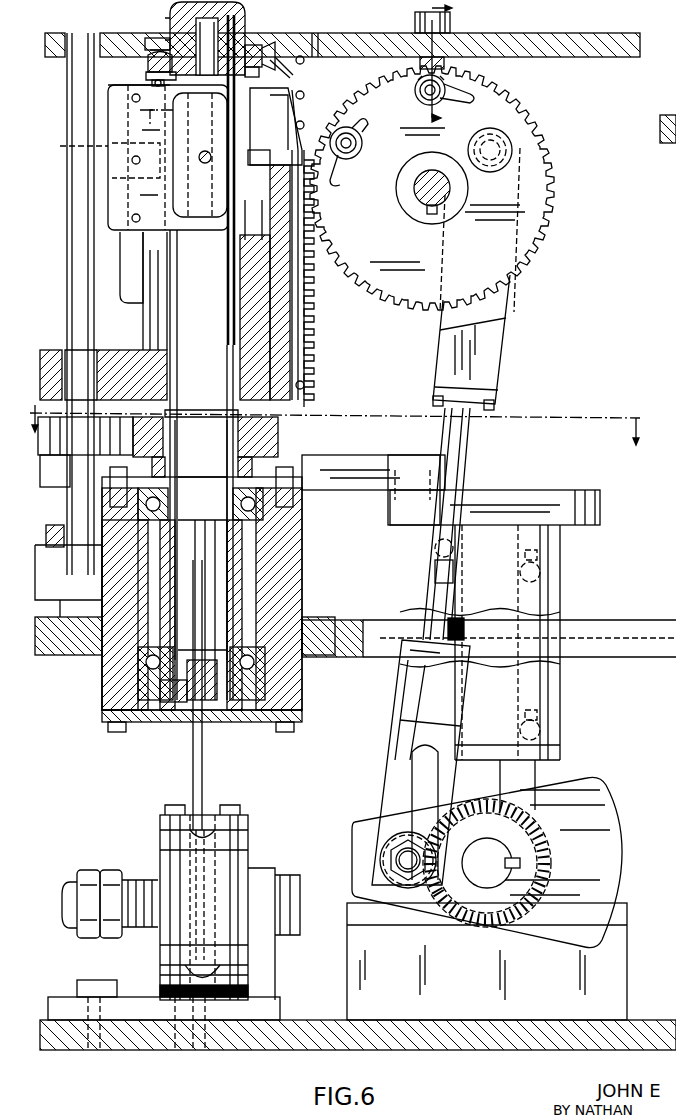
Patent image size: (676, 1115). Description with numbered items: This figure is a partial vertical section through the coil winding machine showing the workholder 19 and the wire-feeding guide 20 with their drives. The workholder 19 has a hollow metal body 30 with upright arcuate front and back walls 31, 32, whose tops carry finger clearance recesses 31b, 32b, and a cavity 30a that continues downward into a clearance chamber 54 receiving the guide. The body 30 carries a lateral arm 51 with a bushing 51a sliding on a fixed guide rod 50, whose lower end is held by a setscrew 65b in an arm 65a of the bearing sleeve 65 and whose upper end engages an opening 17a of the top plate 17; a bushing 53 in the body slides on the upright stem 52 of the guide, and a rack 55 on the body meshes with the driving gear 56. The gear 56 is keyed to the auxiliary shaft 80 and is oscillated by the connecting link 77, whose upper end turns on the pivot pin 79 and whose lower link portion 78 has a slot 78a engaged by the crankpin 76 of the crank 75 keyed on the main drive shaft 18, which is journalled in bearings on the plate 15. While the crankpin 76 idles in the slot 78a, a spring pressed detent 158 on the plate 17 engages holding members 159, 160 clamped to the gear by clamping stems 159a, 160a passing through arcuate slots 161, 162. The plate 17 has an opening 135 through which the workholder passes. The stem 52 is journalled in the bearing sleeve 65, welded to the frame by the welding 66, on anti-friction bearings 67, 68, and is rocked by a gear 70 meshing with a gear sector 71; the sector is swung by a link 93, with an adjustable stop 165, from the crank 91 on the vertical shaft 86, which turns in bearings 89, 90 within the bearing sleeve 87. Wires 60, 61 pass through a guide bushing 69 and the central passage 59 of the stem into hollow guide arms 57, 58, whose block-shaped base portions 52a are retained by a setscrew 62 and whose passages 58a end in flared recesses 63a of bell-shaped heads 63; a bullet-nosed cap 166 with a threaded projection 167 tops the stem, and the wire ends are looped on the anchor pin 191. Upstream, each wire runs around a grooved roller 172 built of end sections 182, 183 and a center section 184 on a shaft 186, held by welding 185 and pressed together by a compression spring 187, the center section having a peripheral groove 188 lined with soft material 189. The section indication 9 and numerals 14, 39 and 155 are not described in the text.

The section line 9 is at (334, 426).
The direction arrow 14 is at (454, 66).
The plate 15 is at (655, 1020).
The plate 17 is at (530, 40).
The opening 17a is at (67, 70).
The main drive shaft 18 is at (480, 875).
The workholder 19 is at (100, 186).
The wire-feeding guide 20 is at (170, 32).
The hollow metal body 30 is at (120, 270).
The cavity 30a is at (253, 226).
The front wall 31 is at (118, 130).
The recess 31b is at (71, 145).
The back wall 32 is at (290, 100).
The recess 32b is at (290, 100).
The slide block 39 is at (176, 128).
The guide rod 50 is at (88, 220).
The arm 51 is at (52, 350).
The bushing 51a is at (104, 350).
The stem 52 is at (302, 346).
The base portions 52a is at (249, 77).
The bushing 53 is at (302, 380).
The clearance chamber 54 is at (168, 262).
The rack 55 is at (314, 312).
The driving gear 56 is at (548, 160).
The guide arm 57 is at (268, 44).
The guide arm 58 is at (150, 38).
The passage 58a is at (148, 55).
The central passage 59 is at (205, 575).
The wire 60 is at (283, 72).
The wire 61 is at (158, 88).
The setscrew 62 is at (250, 45).
The bell-shaped head 63 is at (145, 40).
The recess 63a is at (146, 74).
The bearing sleeve 65 is at (302, 580).
The arm 65a is at (74, 603).
The setscrew 65b is at (68, 581).
The welding 66 is at (304, 612).
The anti-friction bearing 67 is at (262, 660).
The anti-friction bearing 68 is at (262, 508).
The guide bushing 69 is at (170, 700).
The gear 70 is at (335, 411).
The gear sector 71 is at (108, 425).
The crank 75 is at (575, 778).
The crankpin 76 is at (395, 845).
The connecting link 77 is at (470, 445).
The link portion 78 is at (388, 760).
The slot 78a is at (405, 785).
The pivot pin 79 is at (505, 140).
The auxiliary shaft 80 is at (414, 172).
The vertical shaft 86 is at (560, 662).
The bearing sleeve 87 is at (565, 590).
The antifriction bearing 89 is at (565, 722).
The antifriction bearing 90 is at (565, 565).
The crank 91 is at (538, 492).
The link 93 is at (398, 458).
The opening 135 is at (323, 36).
The stub 155 is at (665, 152).
The detent 158 is at (452, 70).
The holding member 159 is at (416, 98).
The clamping stem 159a is at (415, 90).
The holding member 160 is at (352, 160).
The clamping stem 160a is at (366, 126).
The arcuate slot 161 is at (470, 90).
The arcuate slot 162 is at (342, 184).
The adjustable stop 165 is at (52, 487).
The cap 166 is at (207, 38).
The threaded projection 167 is at (209, 48).
The grooved roller 172 is at (248, 832).
The end section 182 is at (242, 806).
The end section 183 is at (166, 812).
The center section 184 is at (208, 820).
The welding 185 is at (250, 866).
The shaft 186 is at (135, 870).
The compression spring 187 is at (135, 930).
The peripheral groove 188 is at (200, 1050).
The soft material 189 is at (190, 970).
The anchor pin 191 is at (152, 82).